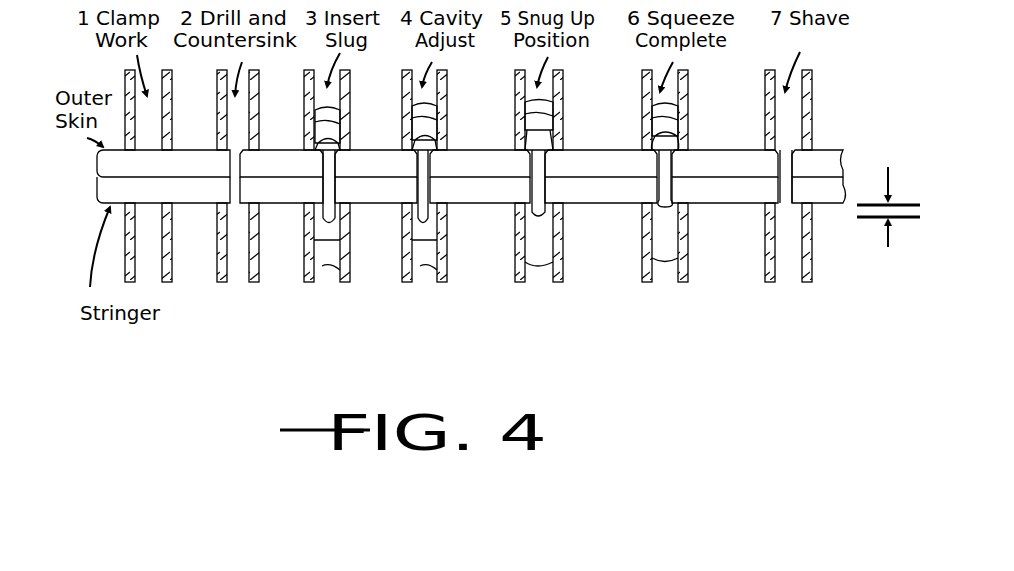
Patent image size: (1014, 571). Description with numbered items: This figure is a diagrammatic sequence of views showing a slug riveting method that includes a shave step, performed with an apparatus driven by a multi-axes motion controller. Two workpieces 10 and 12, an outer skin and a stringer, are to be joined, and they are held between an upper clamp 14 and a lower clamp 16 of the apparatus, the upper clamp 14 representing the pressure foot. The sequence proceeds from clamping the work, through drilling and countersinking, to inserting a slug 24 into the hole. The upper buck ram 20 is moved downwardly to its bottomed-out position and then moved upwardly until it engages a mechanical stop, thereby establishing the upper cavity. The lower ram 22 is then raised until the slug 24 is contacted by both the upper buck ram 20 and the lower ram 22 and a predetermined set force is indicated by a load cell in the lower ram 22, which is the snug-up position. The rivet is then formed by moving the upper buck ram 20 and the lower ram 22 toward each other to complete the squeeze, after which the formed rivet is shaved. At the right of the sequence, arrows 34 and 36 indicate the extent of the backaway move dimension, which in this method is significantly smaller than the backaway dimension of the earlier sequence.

The workpiece 10 is at (185, 162).
The workpiece 12 is at (195, 192).
The upper clamp 14 is at (217, 108).
The lower clamp 16 is at (168, 265).
The upper buck ram 20 is at (304, 120).
The lower ram 22 is at (317, 270).
The slug 24 is at (355, 198).
The arrow 34 is at (888, 167).
The arrow 36 is at (888, 247).